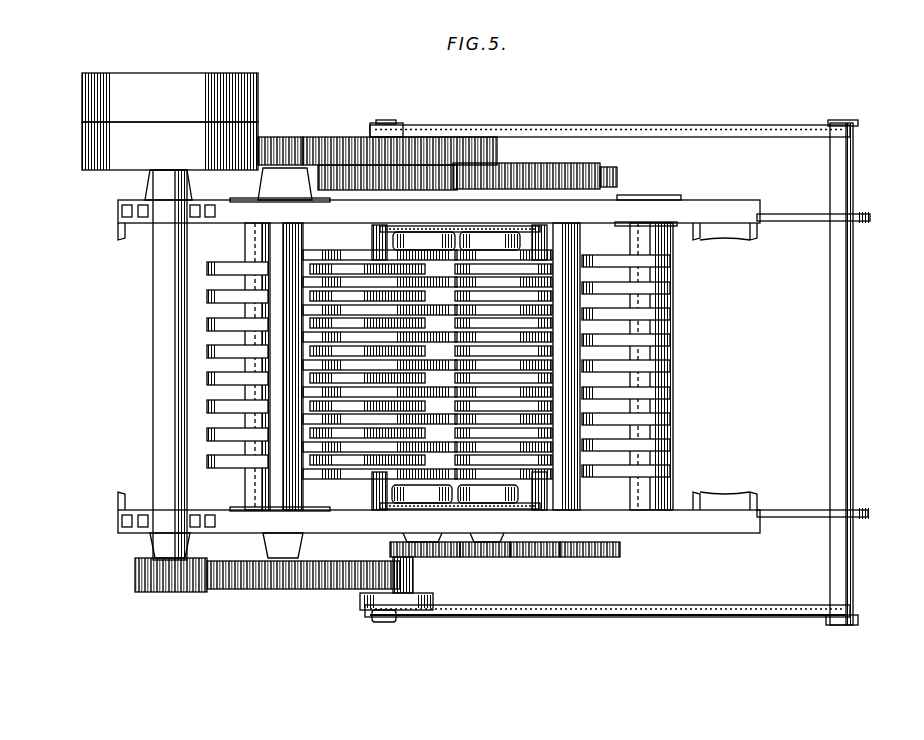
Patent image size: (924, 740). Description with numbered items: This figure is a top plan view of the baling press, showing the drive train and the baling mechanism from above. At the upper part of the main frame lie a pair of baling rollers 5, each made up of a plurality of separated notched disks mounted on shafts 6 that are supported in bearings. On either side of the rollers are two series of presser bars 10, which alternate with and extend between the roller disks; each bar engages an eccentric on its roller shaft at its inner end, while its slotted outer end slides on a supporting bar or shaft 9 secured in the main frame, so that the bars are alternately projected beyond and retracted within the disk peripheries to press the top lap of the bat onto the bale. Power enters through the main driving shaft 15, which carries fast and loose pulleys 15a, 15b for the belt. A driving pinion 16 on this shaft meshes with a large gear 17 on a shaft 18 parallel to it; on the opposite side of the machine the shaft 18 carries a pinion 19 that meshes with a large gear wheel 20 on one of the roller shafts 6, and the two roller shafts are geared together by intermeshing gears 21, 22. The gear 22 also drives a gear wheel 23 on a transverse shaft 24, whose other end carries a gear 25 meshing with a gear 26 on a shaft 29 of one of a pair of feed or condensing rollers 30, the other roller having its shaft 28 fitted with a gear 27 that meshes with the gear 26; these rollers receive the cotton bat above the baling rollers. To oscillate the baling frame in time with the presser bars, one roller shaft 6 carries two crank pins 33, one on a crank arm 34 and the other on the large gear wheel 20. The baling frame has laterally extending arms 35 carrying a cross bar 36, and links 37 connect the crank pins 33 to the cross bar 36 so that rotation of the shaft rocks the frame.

The baling roller 5 is at (345, 283).
The shaft 6 is at (386, 232).
The supporting bar or shaft 9 is at (243, 337).
The presser bar 10 is at (210, 293).
The main driving shaft 15 is at (160, 373).
The fast pulley 15a is at (170, 146).
The loose pulley 15b is at (170, 97).
The driving pinion 16 is at (170, 592).
The large gear 17 is at (247, 590).
The shaft 18 is at (300, 495).
The pinion 19 is at (290, 137).
The large gear wheel 20 is at (362, 137).
The gear 21 is at (420, 180).
The gear 22 is at (500, 185).
The gear wheel 23 is at (618, 178).
The transverse shaft 24 is at (582, 492).
The gear 25 is at (582, 557).
The gear 26 is at (512, 557).
The gear 27 is at (437, 557).
The shaft 28 is at (425, 228).
The shaft 29 is at (487, 557).
The feed or condensing roller 30 is at (456, 367).
The crank pin 33 is at (385, 622).
The crank arm 34 is at (418, 605).
The laterally extending arm 35 is at (808, 214).
The cross bar 36 is at (855, 380).
The link 37 is at (763, 126).